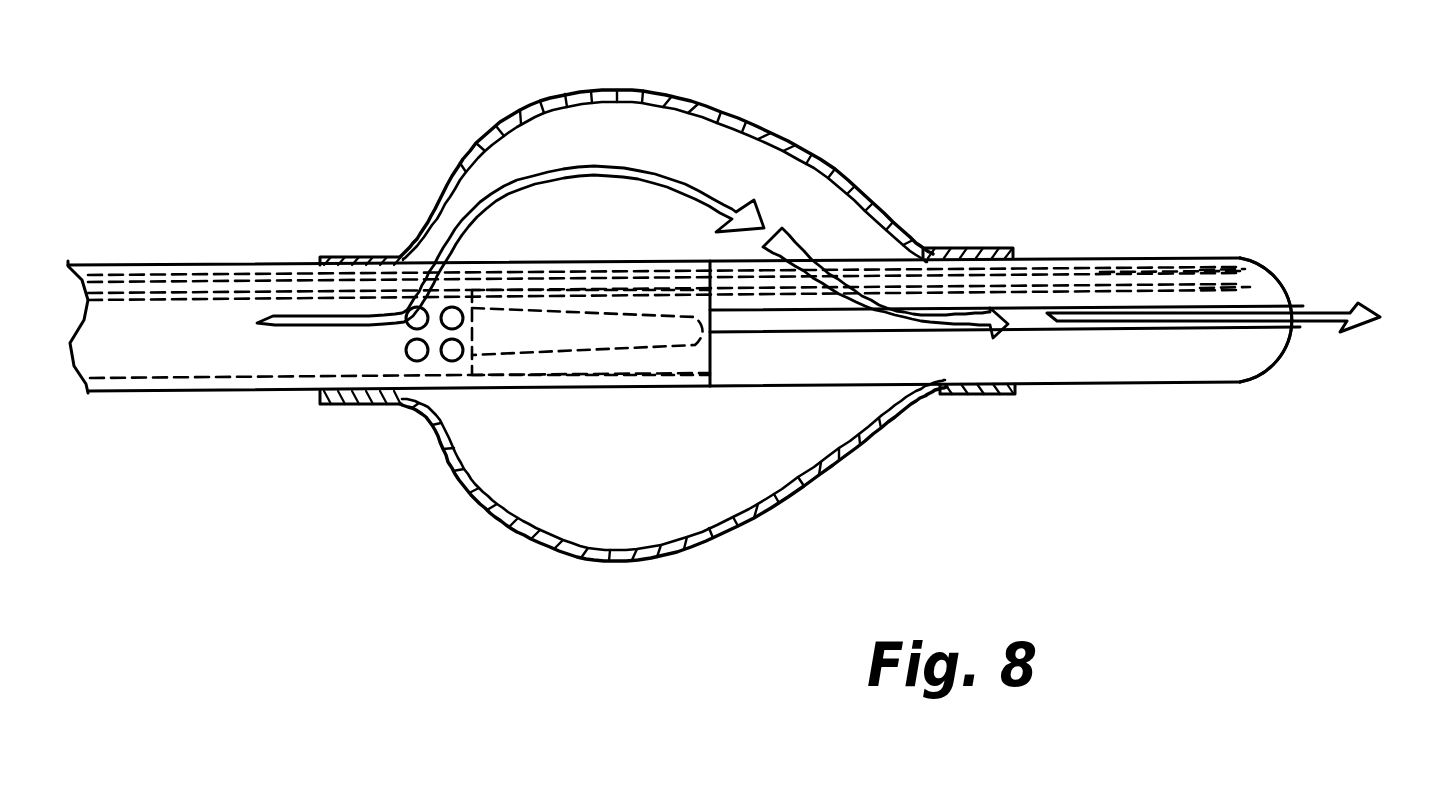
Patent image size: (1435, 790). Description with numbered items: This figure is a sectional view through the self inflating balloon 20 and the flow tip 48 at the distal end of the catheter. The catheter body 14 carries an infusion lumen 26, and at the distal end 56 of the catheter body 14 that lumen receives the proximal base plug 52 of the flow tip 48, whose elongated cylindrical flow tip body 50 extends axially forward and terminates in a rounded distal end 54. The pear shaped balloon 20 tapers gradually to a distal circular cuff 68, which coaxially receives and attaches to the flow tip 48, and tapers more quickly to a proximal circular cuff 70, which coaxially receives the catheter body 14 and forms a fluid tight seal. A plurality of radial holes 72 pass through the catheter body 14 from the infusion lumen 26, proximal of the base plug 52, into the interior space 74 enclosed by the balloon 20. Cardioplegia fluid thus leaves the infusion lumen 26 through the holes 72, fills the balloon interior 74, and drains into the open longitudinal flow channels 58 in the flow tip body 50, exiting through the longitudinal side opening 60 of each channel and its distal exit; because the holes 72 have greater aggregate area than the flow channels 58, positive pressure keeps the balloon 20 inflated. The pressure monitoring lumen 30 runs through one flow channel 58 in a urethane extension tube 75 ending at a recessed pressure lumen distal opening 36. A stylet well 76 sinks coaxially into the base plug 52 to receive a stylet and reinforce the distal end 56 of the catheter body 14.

The catheter body 14 is at (150, 262).
The self inflating balloon 20 is at (853, 187).
The infusion lumen 26 is at (197, 360).
The pressure monitoring lumen 30 is at (222, 290).
The pressure lumen distal opening 36 is at (1257, 282).
The flow tip 48 is at (1232, 414).
The flow tip body 50 is at (1050, 368).
The base plug 52 is at (580, 386).
The rounded distal end 54 is at (1303, 299).
The distal end of the catheter body 56 is at (712, 362).
The flow channel 58 is at (1023, 318).
The longitudinal side opening 60 is at (1240, 277).
The distal circular cuff 68 is at (968, 250).
The proximal circular cuff 70 is at (362, 258).
The radial holes 72 is at (452, 362).
The interior space 74 is at (766, 195).
The extension tube 75 is at (1120, 280).
The stylet well 76 is at (680, 335).